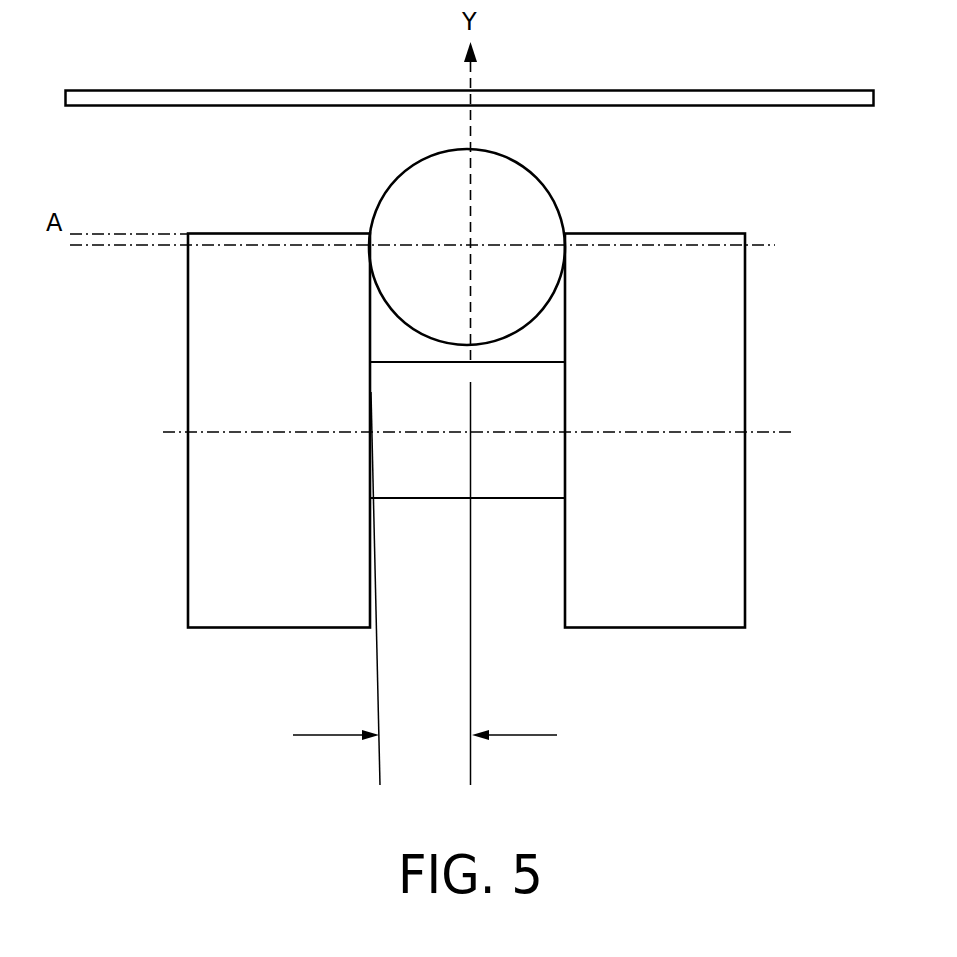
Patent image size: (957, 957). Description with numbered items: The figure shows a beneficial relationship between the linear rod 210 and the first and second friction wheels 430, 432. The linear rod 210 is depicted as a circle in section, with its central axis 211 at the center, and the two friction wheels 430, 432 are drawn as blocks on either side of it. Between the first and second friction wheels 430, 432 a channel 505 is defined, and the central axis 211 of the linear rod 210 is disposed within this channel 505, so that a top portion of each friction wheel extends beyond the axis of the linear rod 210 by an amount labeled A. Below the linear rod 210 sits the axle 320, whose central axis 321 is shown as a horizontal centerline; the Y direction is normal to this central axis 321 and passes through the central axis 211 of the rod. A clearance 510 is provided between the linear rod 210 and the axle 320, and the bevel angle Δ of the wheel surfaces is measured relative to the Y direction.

The linear rod 210 is at (451, 221).
The central axis of linear rod 211 is at (486, 239).
The axle 320 is at (438, 486).
The central axis of axle 321 is at (500, 434).
The first friction wheel 430 is at (296, 602).
The second friction wheel 432 is at (679, 603).
The channel 505 is at (427, 568).
The clearance 510 is at (512, 350).